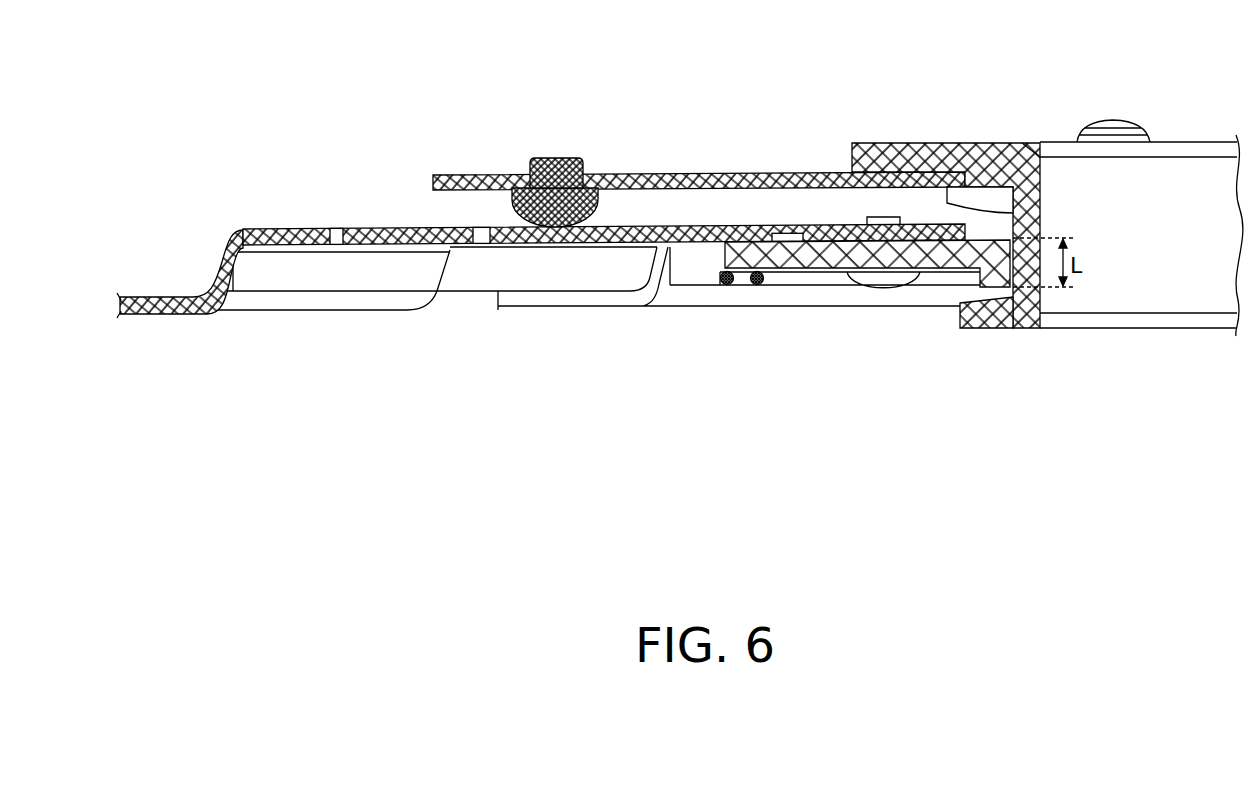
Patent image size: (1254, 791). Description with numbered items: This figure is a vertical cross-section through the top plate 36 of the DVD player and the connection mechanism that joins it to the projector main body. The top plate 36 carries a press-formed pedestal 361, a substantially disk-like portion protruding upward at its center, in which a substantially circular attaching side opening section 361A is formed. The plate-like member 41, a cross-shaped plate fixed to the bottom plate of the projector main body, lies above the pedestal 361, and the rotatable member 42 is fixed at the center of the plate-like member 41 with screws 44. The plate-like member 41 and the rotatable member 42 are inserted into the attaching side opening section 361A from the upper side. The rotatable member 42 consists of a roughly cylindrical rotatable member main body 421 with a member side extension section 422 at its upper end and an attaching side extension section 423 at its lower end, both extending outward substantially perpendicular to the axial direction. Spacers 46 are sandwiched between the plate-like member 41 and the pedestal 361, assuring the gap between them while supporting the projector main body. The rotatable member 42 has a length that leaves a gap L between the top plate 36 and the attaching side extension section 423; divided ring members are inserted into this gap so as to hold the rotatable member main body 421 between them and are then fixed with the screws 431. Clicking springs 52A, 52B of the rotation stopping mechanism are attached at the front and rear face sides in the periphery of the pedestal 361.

The top plate 36 is at (152, 296).
The pedestal 361 is at (260, 228).
The attaching side opening section 361A is at (963, 218).
The plate-like member 41 is at (458, 174).
The rotatable member 42 is at (1054, 131).
The rotatable member main body 421 is at (1203, 303).
The member side extension section 422 is at (897, 142).
The attaching side extension section 423 is at (990, 329).
The screws 431 is at (900, 288).
The screws 44 is at (1127, 120).
The spacers 46 is at (557, 157).
The clicking spring 52A is at (722, 255).
The clicking spring 52B is at (690, 310).